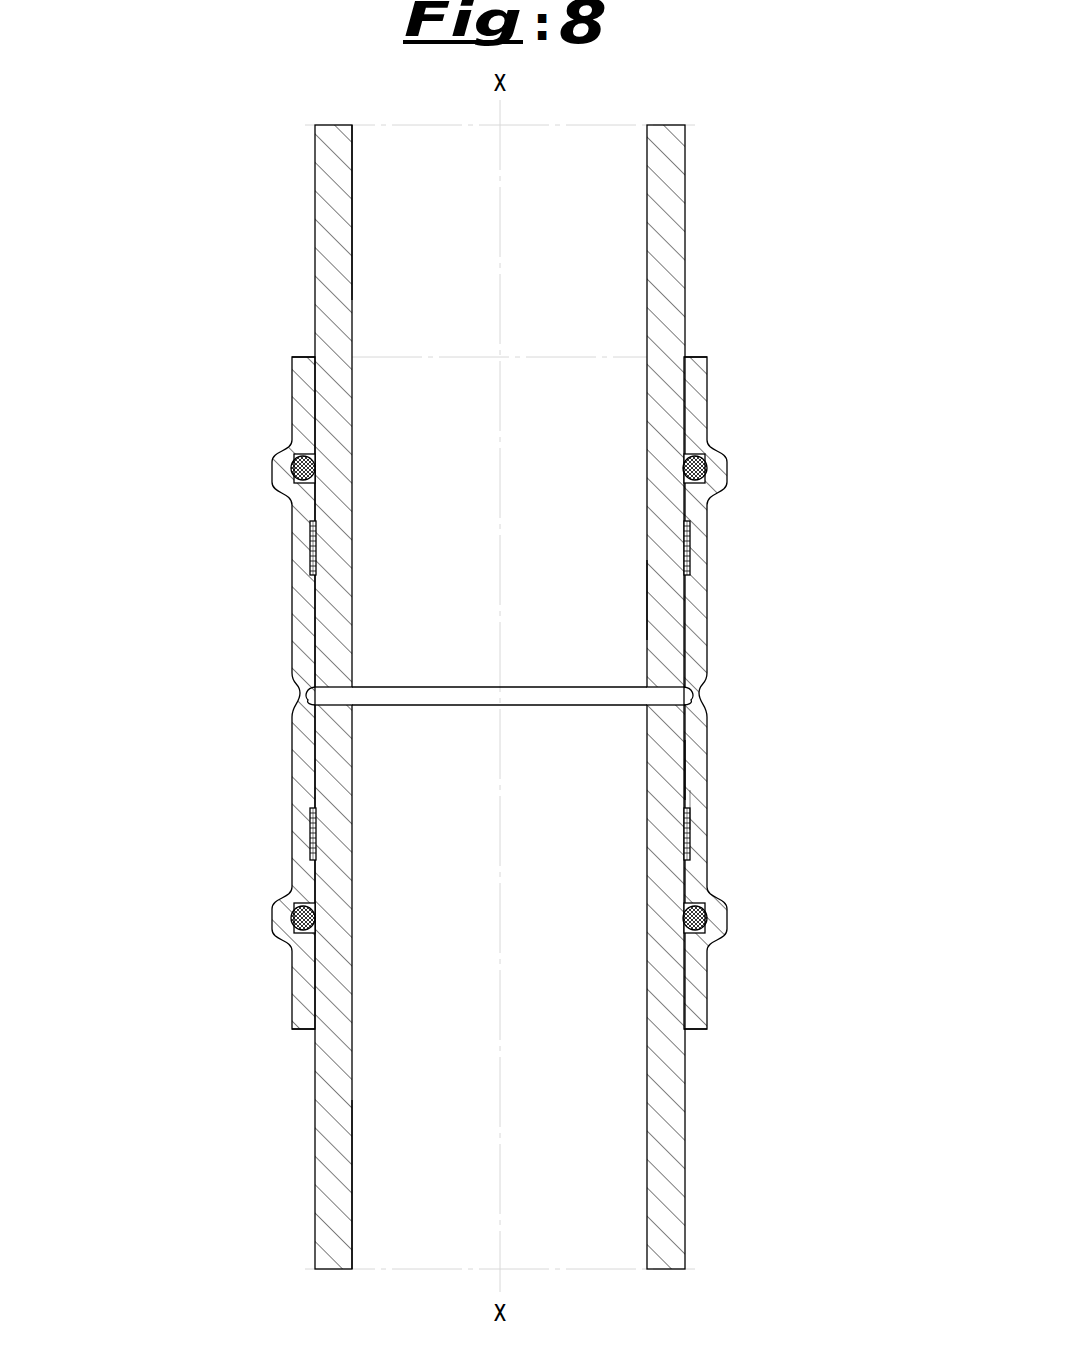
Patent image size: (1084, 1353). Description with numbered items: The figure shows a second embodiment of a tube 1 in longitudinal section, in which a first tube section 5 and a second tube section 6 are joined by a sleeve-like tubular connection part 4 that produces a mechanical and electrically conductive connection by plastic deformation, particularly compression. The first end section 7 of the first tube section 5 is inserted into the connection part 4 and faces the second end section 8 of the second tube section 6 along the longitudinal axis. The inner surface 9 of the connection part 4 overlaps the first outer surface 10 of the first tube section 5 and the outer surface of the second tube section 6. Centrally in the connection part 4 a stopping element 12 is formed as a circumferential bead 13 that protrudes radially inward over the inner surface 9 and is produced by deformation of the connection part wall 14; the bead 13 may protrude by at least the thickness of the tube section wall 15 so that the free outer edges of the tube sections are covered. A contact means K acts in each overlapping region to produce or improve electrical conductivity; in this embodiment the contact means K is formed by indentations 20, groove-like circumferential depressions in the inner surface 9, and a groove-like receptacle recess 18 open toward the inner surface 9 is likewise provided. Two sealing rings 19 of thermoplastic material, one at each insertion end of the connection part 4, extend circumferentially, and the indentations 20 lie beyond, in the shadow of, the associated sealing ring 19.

The tube 1 is at (727, 160).
The tubular connection part 4 is at (760, 458).
The first tube section 5 is at (668, 228).
The second tube section 6 is at (668, 1177).
The first end section 7 is at (660, 588).
The second end section 8 is at (665, 778).
The inner surface 9 is at (688, 605).
The first outer surface 10 is at (312, 623).
The stopping element 12 is at (305, 695).
The bead 13 is at (692, 697).
The connection part wall 14 is at (697, 810).
The tube section wall 15 is at (330, 207).
The groove-like receptacle recess 18 is at (295, 472).
The sealing ring 19 is at (297, 466).
The indentation 20 is at (311, 563).
The contact means K is at (311, 545).